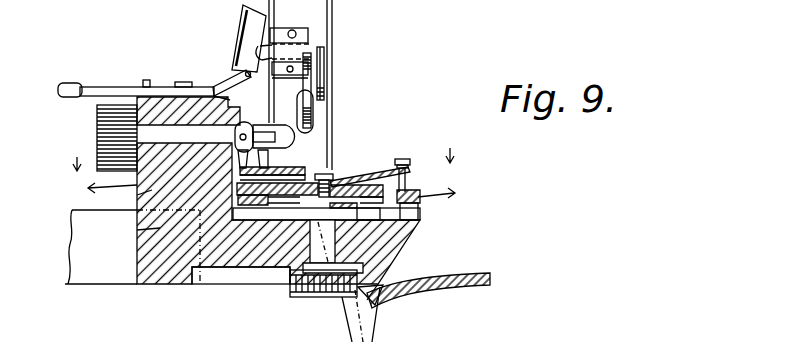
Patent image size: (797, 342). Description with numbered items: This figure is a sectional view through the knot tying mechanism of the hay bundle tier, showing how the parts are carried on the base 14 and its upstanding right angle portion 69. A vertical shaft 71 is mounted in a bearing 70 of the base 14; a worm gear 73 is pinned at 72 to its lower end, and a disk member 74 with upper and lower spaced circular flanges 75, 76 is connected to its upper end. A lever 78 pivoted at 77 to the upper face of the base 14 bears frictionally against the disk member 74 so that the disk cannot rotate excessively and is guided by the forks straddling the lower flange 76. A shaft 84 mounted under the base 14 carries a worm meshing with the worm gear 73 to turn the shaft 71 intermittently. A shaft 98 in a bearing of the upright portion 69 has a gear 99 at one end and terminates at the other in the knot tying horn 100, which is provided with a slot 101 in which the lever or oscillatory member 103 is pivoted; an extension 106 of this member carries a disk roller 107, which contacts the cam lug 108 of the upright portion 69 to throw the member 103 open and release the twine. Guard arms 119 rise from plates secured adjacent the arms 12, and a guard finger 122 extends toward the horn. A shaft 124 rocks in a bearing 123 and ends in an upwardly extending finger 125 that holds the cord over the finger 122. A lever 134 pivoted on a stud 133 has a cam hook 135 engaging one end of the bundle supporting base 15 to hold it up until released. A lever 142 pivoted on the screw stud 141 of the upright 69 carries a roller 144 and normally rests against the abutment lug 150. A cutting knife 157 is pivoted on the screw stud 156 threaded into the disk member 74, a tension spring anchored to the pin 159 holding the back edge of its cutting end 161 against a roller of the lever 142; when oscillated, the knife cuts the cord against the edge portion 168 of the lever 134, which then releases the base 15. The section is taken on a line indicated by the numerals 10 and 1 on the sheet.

The base line 1 is at (82, 306).
The section line 10 is at (268, 176).
The arm 12 is at (72, 255).
The base 14 is at (420, 248).
The bundle supporting base 15 is at (478, 283).
The upstanding right angle portion 69 is at (158, 110).
The bearing 70 is at (268, 263).
The shaft 71 is at (335, 245).
The pin 72 is at (287, 273).
The worm gear 73 is at (320, 294).
The disk member 74 is at (328, 165).
The upper circular flange 75 is at (402, 159).
The lower circular flange 76 is at (422, 237).
The pivot 77 is at (425, 207).
The lever 78 is at (458, 202).
The shaft 84 is at (181, 0).
The shaft 98 is at (137, 133).
The gear 99 is at (97, 152).
The knot tying horn 100 is at (263, 128).
The slot 101 is at (265, 120).
The lever or oscillatory member 103 is at (305, 147).
The extension 106 is at (240, 137).
The disk roller 107 is at (211, 137).
The cam lug 108 is at (243, 76).
The guard arm 119 is at (333, 18).
The guard finger 122 is at (328, 65).
The bearing 123 is at (328, 30).
The shaft 124 is at (331, 40).
The finger 125 is at (332, 78).
The stud 133 is at (377, 333).
The lever 134 is at (335, 335).
The cam hook 135 is at (383, 312).
The screw stud 141 is at (183, 82).
The lever 142 is at (112, 87).
The roller 144 is at (69, 83).
The abutment lug 150 is at (145, 80).
The screw stud 156 is at (330, 172).
The cutting knife 157 is at (357, 175).
The pin 159 is at (137, 230).
The cutting end 161 is at (138, 194).
The edge portion 168 is at (345, 165).